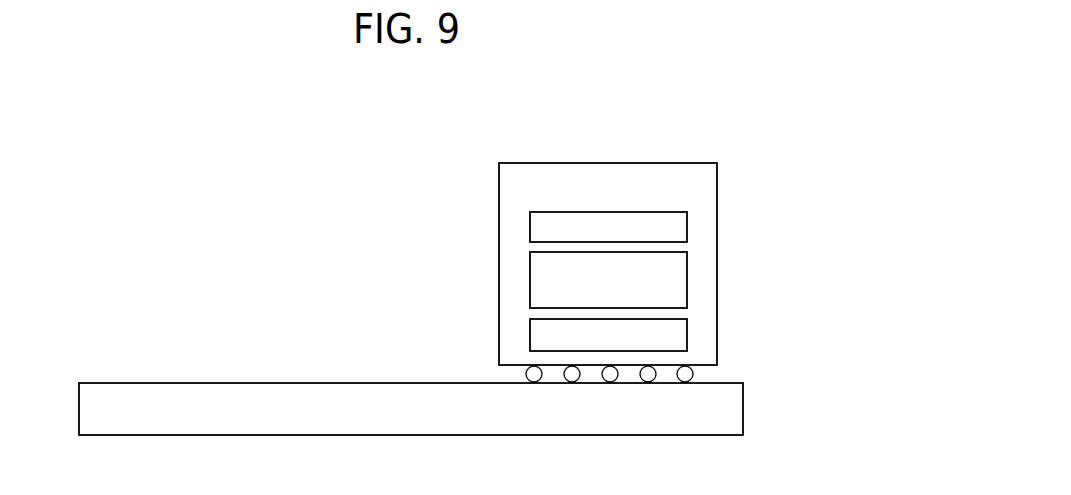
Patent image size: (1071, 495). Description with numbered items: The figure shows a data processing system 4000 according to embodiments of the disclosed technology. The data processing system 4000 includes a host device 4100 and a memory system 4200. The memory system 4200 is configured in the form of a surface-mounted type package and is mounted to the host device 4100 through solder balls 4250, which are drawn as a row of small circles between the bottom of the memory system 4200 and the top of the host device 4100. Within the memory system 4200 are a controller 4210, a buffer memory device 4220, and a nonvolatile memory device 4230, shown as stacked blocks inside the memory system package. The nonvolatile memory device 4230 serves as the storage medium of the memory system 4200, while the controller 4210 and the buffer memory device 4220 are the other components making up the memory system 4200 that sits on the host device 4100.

The data processing system 4000 is at (106, 153).
The host device 4100 is at (152, 382).
The memory system 4200 is at (667, 163).
The controller 4210 is at (688, 227).
The buffer memory device 4220 is at (688, 278).
The nonvolatile memory device 4230 is at (688, 333).
The solder balls 4250 is at (703, 372).